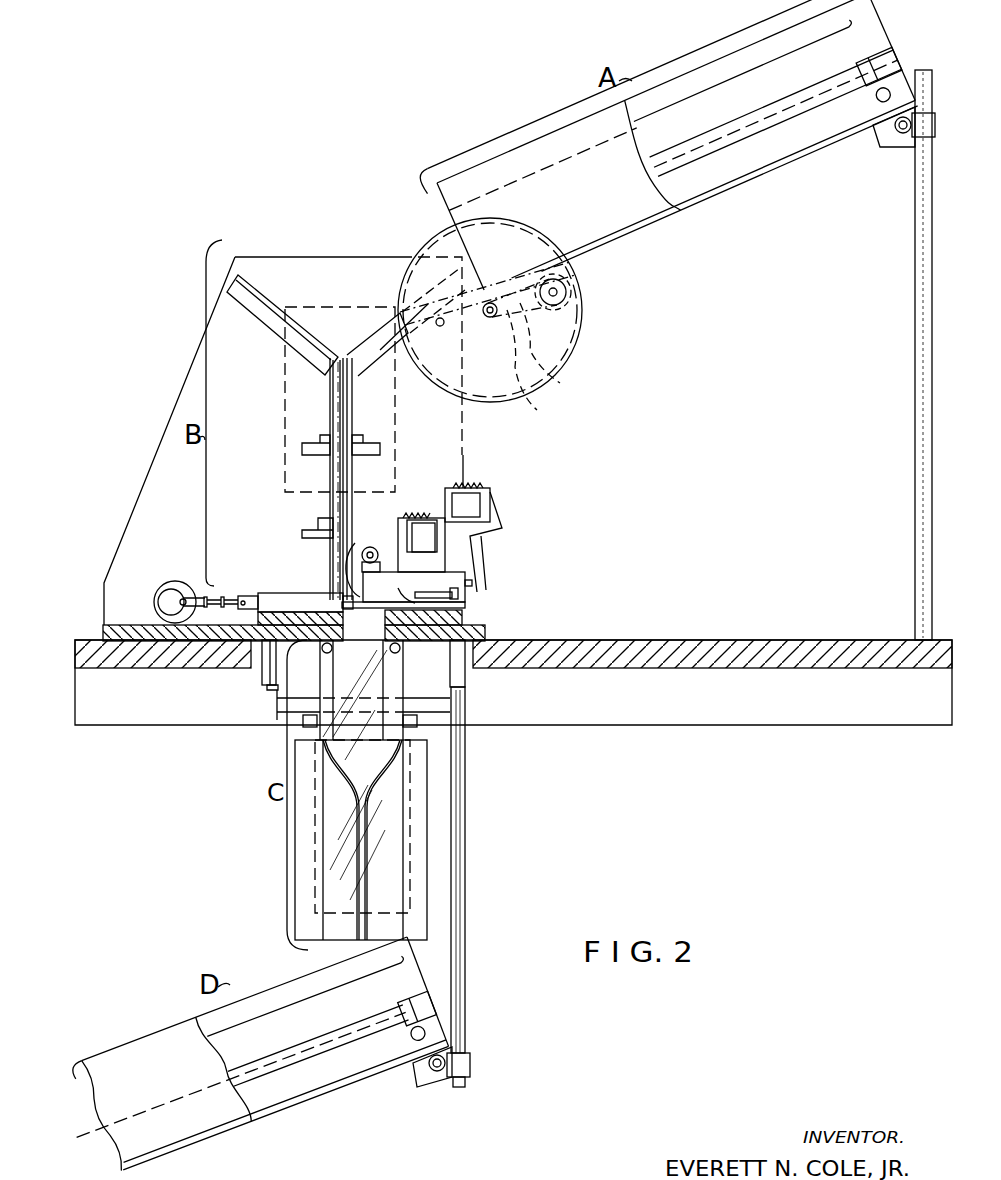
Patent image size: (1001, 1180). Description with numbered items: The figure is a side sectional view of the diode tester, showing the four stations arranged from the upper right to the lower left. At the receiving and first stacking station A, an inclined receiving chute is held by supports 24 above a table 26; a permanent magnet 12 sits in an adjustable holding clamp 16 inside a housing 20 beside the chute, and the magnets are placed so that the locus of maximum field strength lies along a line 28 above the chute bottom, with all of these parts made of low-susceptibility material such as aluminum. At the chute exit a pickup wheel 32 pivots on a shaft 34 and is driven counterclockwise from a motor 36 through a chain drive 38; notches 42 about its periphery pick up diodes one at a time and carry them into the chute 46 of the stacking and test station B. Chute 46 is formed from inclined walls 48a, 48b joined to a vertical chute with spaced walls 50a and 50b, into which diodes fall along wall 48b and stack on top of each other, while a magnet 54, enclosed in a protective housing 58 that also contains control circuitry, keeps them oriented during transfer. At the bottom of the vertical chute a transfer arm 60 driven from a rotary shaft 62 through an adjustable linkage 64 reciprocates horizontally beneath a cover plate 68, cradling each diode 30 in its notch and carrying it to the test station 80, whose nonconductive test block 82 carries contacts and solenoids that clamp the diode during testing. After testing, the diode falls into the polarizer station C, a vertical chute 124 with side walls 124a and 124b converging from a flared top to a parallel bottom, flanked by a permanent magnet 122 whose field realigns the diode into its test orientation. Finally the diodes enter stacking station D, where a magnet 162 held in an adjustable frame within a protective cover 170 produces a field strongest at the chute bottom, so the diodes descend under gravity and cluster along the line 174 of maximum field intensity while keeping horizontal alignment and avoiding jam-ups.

The permanent magnet 12 is at (765, 123).
The adjustable holding clamp 16 is at (862, 100).
The housing 20 is at (592, 228).
The support 24 is at (918, 322).
The table 26 is at (770, 639).
The line of maximum magnetic field strength 28 is at (607, 190).
The diode 30 is at (342, 473).
The pickup wheel 32 is at (497, 380).
The shaft 34 is at (537, 410).
The motor 36 is at (587, 273).
The chain drive 38 is at (557, 378).
The notches 42 is at (575, 357).
The chute 46 is at (346, 333).
The inclined wall 48a is at (300, 322).
The inclined wall 48b is at (382, 326).
The wall 50a is at (332, 403).
The wall 50b is at (347, 415).
The magnet 54 is at (395, 463).
The protective housing 58 is at (158, 493).
The transfer arm 60 is at (252, 598).
The rotary shaft 62 is at (172, 598).
The adjustable linkage 64 is at (213, 598).
The cover plate 68 is at (308, 597).
The test station 80 is at (386, 513).
The test block 82 is at (463, 607).
The permanent magnet 122 is at (412, 840).
The vertical chute 124 is at (358, 840).
The side wall 124a is at (355, 872).
The side wall 124b is at (367, 882).
The magnet 162 is at (367, 1027).
The protective cover 170 is at (188, 1127).
The line of maximum magnetic field intensity 174 is at (265, 1067).